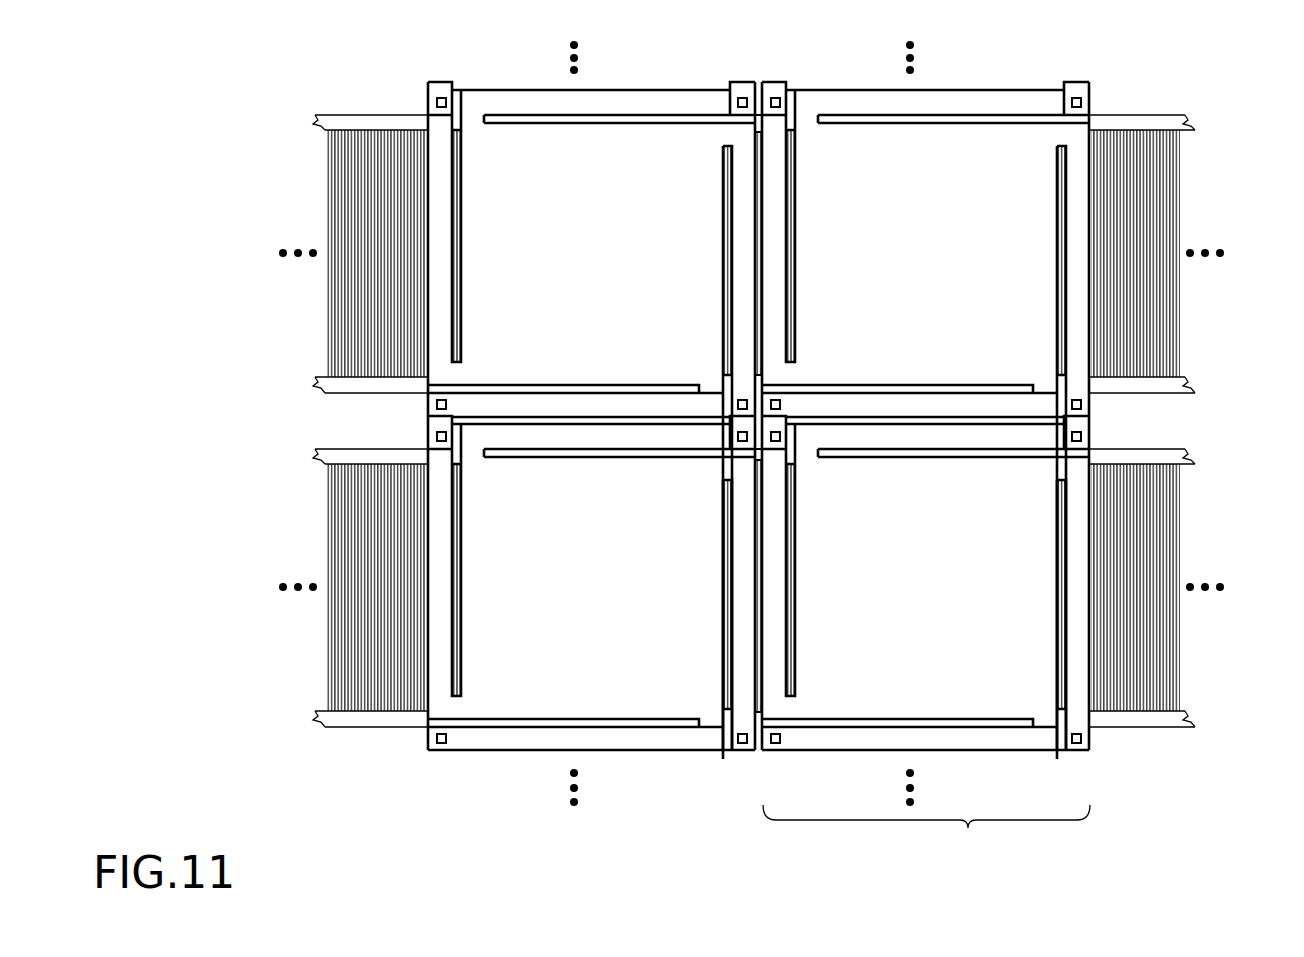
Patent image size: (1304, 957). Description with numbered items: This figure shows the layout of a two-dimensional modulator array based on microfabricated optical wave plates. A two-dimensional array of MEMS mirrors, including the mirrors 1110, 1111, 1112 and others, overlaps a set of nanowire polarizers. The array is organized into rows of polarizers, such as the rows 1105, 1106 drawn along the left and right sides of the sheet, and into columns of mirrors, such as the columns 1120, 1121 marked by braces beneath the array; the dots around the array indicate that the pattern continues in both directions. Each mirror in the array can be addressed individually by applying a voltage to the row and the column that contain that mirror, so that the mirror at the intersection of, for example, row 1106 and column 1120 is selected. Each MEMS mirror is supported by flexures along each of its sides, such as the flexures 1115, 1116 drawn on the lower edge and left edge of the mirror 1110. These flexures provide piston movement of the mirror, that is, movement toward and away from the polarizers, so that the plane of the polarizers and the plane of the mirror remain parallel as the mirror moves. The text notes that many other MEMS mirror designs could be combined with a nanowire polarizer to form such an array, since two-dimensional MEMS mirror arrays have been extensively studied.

The row of polarizers 1105 is at (1173, 171).
The row of polarizers 1106 is at (1173, 505).
The MEMS mirror 1110 is at (556, 605).
The MEMS mirror 1111 is at (891, 605).
The MEMS mirror 1112 is at (891, 265).
The flexure 1115 is at (632, 740).
The flexure 1116 is at (440, 660).
The column of mirrors 1120 is at (755, 805).
The column of mirrors 1121 is at (926, 835).